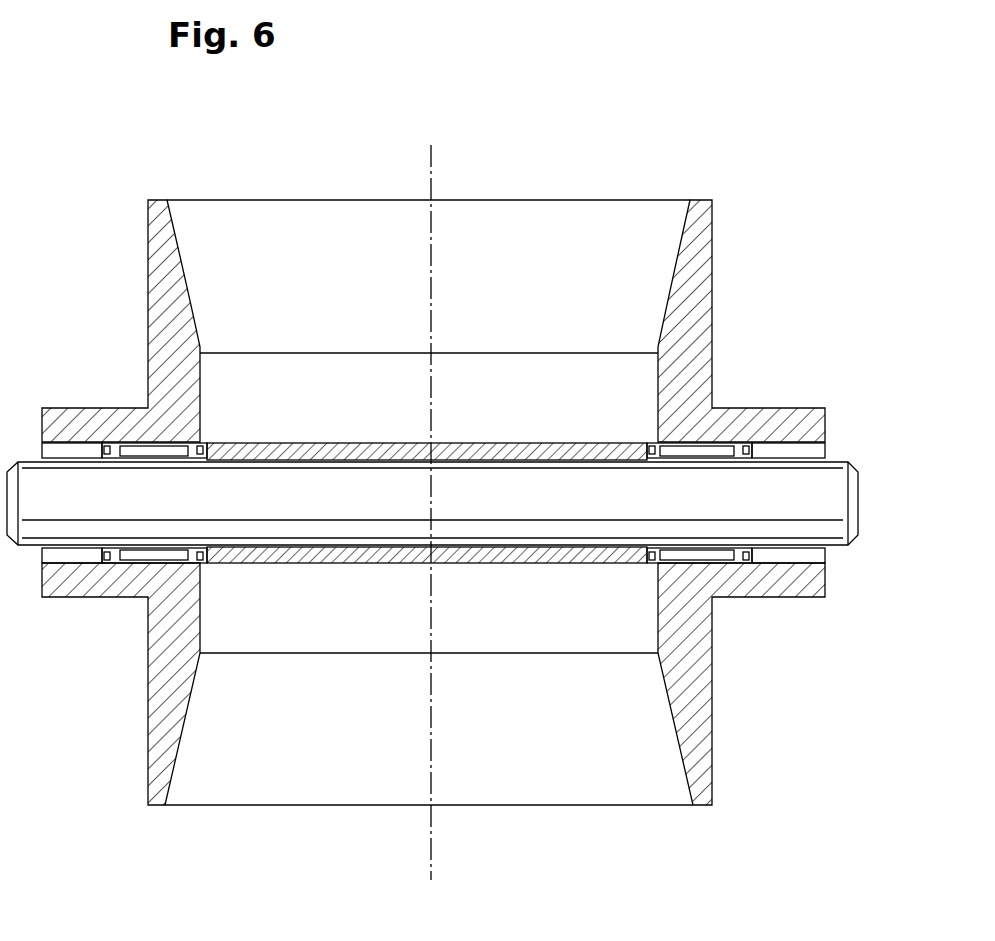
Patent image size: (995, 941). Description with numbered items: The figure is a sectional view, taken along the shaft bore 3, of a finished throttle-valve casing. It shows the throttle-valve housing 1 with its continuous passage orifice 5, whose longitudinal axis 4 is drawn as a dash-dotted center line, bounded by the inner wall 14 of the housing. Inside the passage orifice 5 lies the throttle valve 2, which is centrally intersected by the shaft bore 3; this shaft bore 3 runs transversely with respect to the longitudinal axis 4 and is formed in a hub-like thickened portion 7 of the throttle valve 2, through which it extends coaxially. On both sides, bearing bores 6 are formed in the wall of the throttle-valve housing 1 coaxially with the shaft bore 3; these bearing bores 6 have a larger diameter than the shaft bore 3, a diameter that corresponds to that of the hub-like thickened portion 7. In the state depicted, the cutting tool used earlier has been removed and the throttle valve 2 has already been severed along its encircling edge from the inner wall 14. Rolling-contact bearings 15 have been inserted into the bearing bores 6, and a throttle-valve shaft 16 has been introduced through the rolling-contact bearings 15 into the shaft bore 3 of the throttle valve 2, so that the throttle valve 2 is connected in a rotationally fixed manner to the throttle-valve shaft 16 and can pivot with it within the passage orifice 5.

The throttle-valve housing 1 is at (690, 290).
The throttle valve 2 is at (567, 445).
The shaft bore 3 is at (490, 442).
The longitudinal axis 4 is at (431, 818).
The passage orifice 5 is at (294, 378).
The bearing bore 6 is at (68, 553).
The hub-like thickened portion 7 is at (238, 565).
The inner wall 14 is at (192, 393).
The rolling-contact bearing 15 is at (130, 553).
The throttle-valve shaft 16 is at (283, 500).